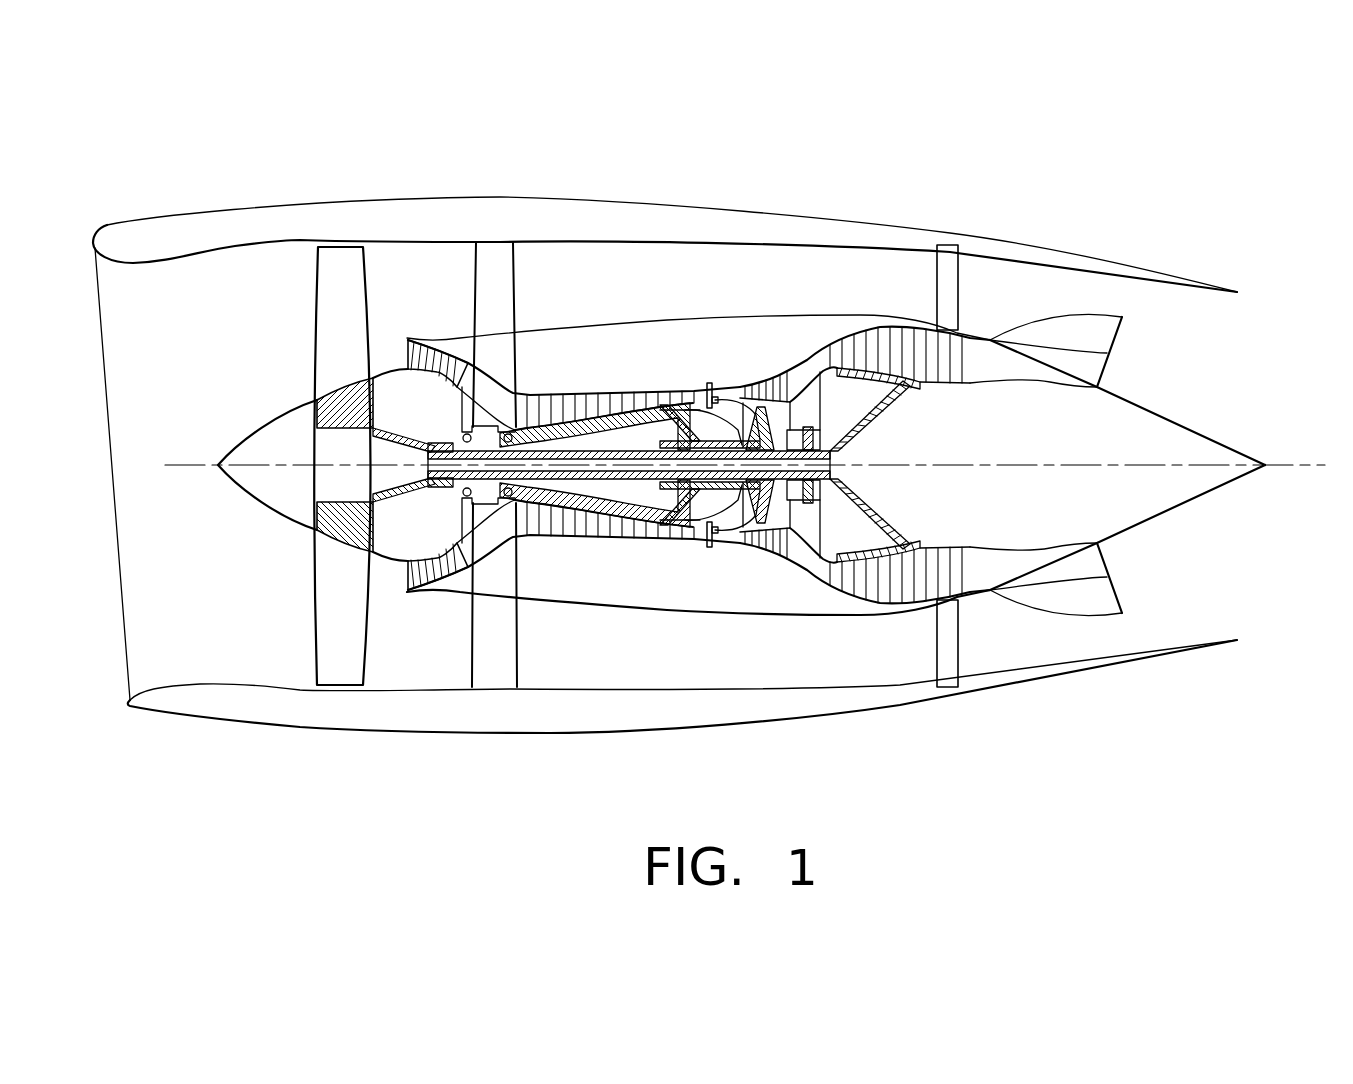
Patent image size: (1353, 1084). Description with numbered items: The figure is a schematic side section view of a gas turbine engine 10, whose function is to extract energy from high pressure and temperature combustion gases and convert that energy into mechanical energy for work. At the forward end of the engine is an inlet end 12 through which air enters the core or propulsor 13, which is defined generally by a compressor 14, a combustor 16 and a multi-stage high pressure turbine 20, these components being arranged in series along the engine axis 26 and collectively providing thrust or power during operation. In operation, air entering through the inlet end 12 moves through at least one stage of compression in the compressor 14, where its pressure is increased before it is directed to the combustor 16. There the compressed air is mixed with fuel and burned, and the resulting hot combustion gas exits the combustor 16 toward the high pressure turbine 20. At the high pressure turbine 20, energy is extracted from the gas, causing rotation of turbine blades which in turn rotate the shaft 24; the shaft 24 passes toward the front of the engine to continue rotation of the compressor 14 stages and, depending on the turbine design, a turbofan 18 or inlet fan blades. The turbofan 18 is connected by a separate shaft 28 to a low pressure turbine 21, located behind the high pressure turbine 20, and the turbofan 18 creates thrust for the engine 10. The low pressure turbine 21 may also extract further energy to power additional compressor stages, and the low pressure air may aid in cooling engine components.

The gas turbine engine 10 is at (978, 178).
The inlet end 12 is at (118, 295).
The core or propulsor 13 is at (666, 284).
The compressor 14 is at (558, 393).
The combustor 16 is at (730, 387).
The turbofan 18 is at (282, 307).
The multi-stage high pressure turbine 20 is at (782, 377).
The low pressure turbine 21 is at (907, 393).
The shaft 24 is at (705, 508).
The engine axis 26 is at (1326, 465).
The shaft 28 is at (613, 480).